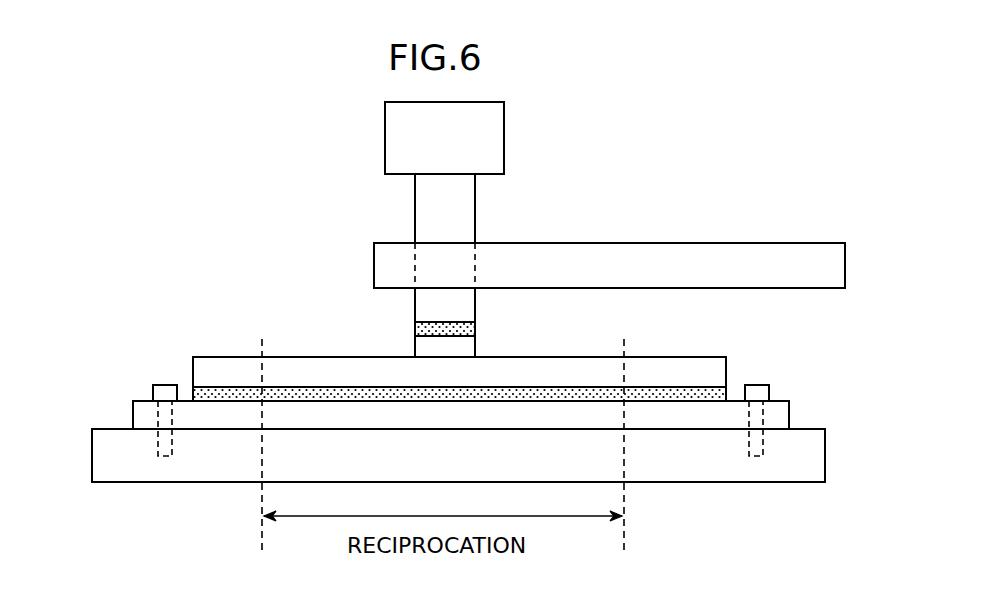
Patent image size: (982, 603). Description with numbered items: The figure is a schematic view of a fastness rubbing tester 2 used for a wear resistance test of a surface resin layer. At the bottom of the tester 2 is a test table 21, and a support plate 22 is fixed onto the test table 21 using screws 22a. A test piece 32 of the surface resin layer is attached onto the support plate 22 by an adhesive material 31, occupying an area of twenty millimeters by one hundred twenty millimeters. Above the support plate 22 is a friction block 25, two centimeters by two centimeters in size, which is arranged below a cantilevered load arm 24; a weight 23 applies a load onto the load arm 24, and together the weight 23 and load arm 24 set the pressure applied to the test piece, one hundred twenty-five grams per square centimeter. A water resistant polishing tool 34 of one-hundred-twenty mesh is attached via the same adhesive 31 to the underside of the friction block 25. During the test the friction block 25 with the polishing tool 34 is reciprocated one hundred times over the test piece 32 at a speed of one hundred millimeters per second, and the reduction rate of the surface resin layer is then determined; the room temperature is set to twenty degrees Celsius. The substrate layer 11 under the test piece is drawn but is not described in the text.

The tester 2 is at (717, 535).
The substrate 11 is at (214, 357).
The test table 21 is at (92, 458).
The support plate 22 is at (133, 420).
The screws 22a is at (760, 385).
The weight 23 is at (504, 135).
The load arm 24 is at (820, 243).
The friction block 25 is at (476, 305).
The adhesive material 31 is at (413, 388).
The test piece 32 is at (193, 365).
The water resistant polishing tool 34 is at (476, 341).